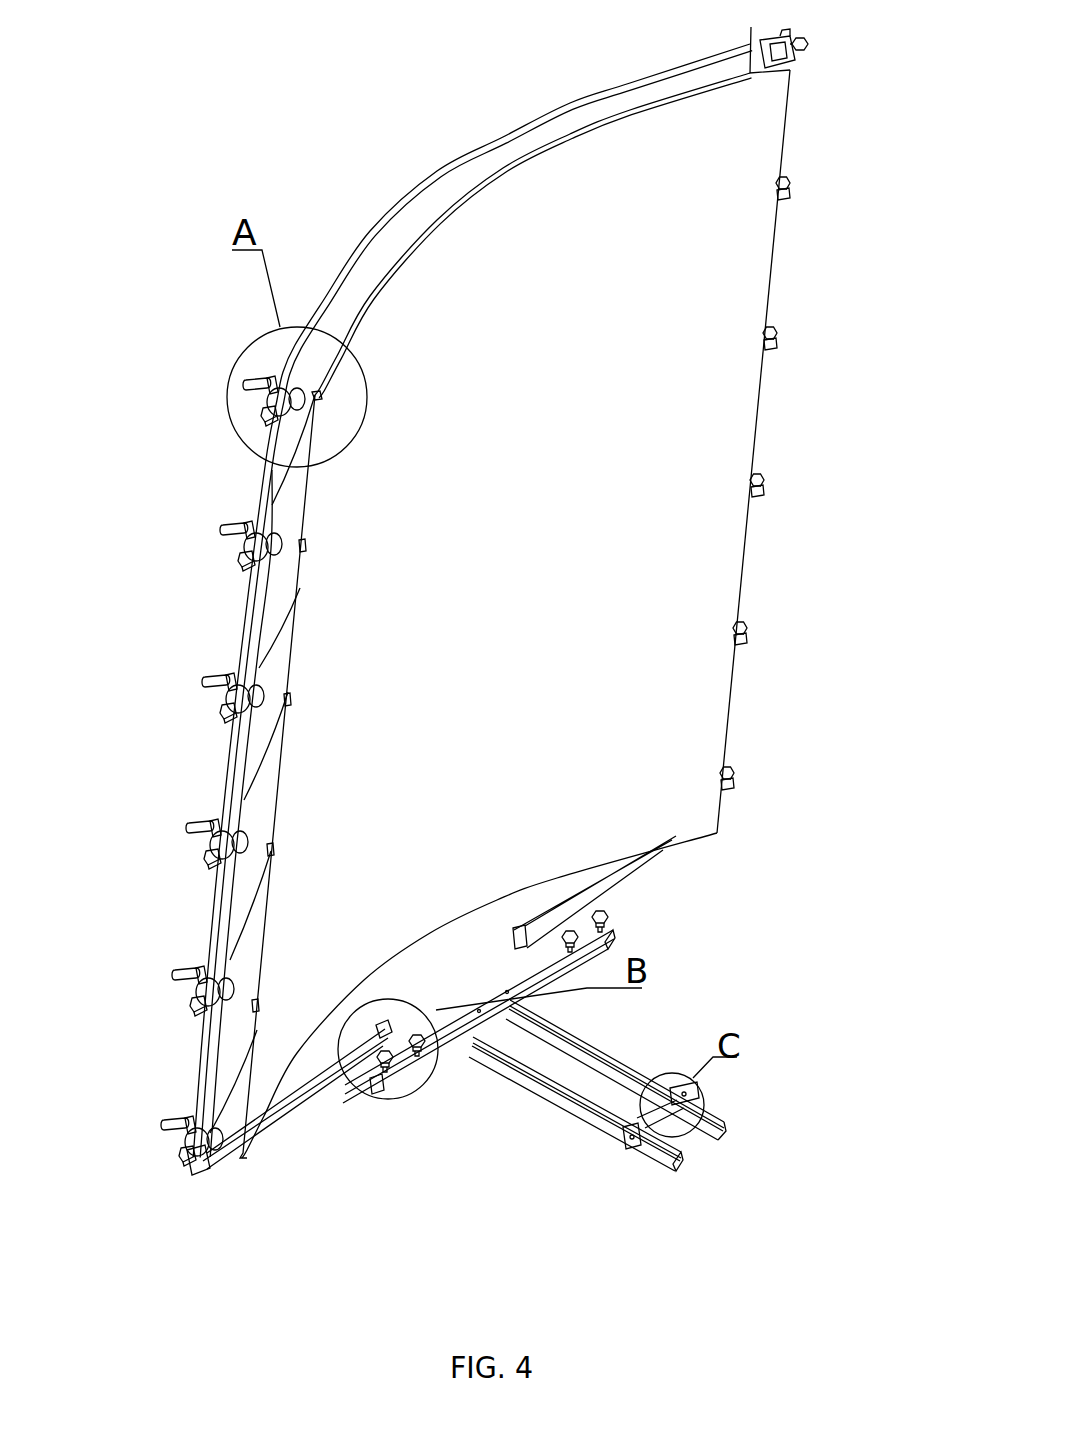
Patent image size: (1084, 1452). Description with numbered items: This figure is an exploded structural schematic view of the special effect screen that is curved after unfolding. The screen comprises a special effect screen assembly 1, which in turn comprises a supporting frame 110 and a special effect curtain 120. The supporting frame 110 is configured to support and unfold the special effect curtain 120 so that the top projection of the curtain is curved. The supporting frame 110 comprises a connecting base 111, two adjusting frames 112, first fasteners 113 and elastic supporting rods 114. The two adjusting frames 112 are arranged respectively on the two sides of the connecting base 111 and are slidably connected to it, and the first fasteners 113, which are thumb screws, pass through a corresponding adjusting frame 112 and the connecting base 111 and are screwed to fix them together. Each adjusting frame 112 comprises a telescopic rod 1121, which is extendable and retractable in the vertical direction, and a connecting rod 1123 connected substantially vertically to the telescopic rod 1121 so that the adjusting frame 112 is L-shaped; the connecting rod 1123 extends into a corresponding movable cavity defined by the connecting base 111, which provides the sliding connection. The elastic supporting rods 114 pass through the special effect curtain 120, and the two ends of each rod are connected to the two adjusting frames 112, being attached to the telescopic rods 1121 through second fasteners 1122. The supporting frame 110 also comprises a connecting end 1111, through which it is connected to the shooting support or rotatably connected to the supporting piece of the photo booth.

The special effect screen assembly 1 is at (447, 68).
The special effect curtain 120 is at (677, 267).
The supporting frame 110 is at (488, 1230).
The connecting base 111 is at (520, 1060).
The connecting end 1111 is at (705, 1150).
The adjusting frame 112 is at (304, 1250).
The telescopic rod 1121 is at (197, 1072).
The second fastener 1122 is at (200, 1012).
The connecting rod 1123 is at (212, 1160).
The first fastener 113 is at (372, 1093).
The elastic supporting rod 114 is at (258, 1040).